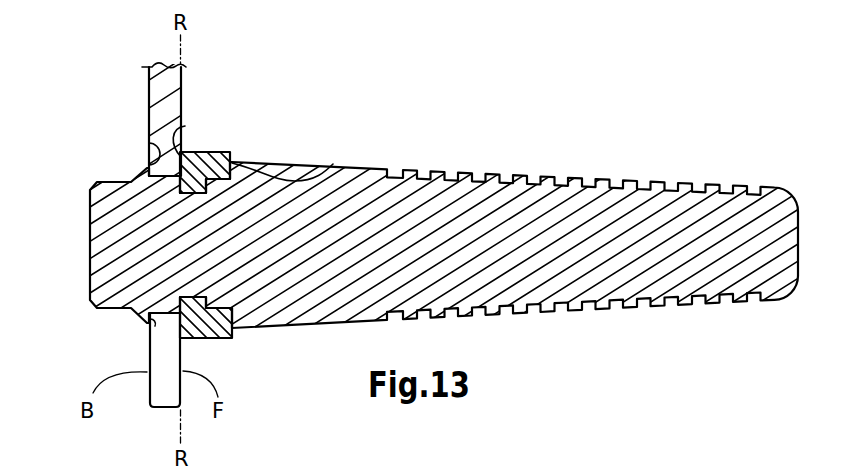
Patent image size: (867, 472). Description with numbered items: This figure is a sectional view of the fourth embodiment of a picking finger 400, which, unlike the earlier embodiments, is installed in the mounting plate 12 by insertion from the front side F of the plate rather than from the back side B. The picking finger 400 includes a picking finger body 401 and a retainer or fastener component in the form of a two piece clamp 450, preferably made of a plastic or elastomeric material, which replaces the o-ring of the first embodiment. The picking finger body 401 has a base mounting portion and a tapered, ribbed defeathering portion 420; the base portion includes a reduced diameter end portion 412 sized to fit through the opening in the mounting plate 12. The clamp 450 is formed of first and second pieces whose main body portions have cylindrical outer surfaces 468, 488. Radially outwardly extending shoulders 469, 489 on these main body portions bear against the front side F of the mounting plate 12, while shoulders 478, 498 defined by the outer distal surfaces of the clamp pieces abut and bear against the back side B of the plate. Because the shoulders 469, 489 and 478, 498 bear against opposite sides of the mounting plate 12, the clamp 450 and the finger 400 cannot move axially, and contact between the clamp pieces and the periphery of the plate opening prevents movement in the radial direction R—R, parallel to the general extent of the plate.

The mounting plate 12 is at (182, 91).
The picking finger 400 is at (503, 144).
The picking finger body 401 is at (538, 171).
The reduced diameter end portion 412 is at (130, 235).
The tapered, ribbed defeathering portion 420 is at (695, 174).
The two piece clamp 450 is at (208, 150).
The outer surface of main body portion 468 is at (333, 164).
The radially outwardly extending shoulder 469 is at (185, 126).
The radially outwardly extending shoulder 478 is at (149, 143).
The outer surface of main body portion 488 is at (213, 322).
The radially outwardly extending shoulder 489 is at (151, 318).
The radially outwardly extending shoulder 498 is at (152, 322).